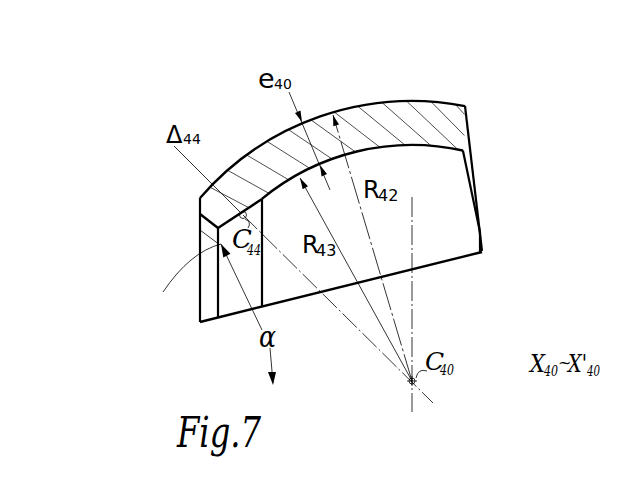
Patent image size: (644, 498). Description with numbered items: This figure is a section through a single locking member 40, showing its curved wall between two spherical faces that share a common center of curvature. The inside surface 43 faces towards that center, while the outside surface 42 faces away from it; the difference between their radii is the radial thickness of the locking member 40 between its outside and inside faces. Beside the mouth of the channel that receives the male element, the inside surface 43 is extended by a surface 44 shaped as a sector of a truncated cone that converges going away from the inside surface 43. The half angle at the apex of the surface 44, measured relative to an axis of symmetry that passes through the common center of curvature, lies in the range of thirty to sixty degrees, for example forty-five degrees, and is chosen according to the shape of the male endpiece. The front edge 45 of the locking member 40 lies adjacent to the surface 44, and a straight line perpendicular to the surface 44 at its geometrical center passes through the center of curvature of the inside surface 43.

The locking member 40 is at (371, 207).
The outside surface 42 is at (376, 104).
The inside surface 43 is at (362, 172).
The surface in the form of a sector of a truncated cone 44 is at (243, 294).
The front edge 45 is at (208, 272).